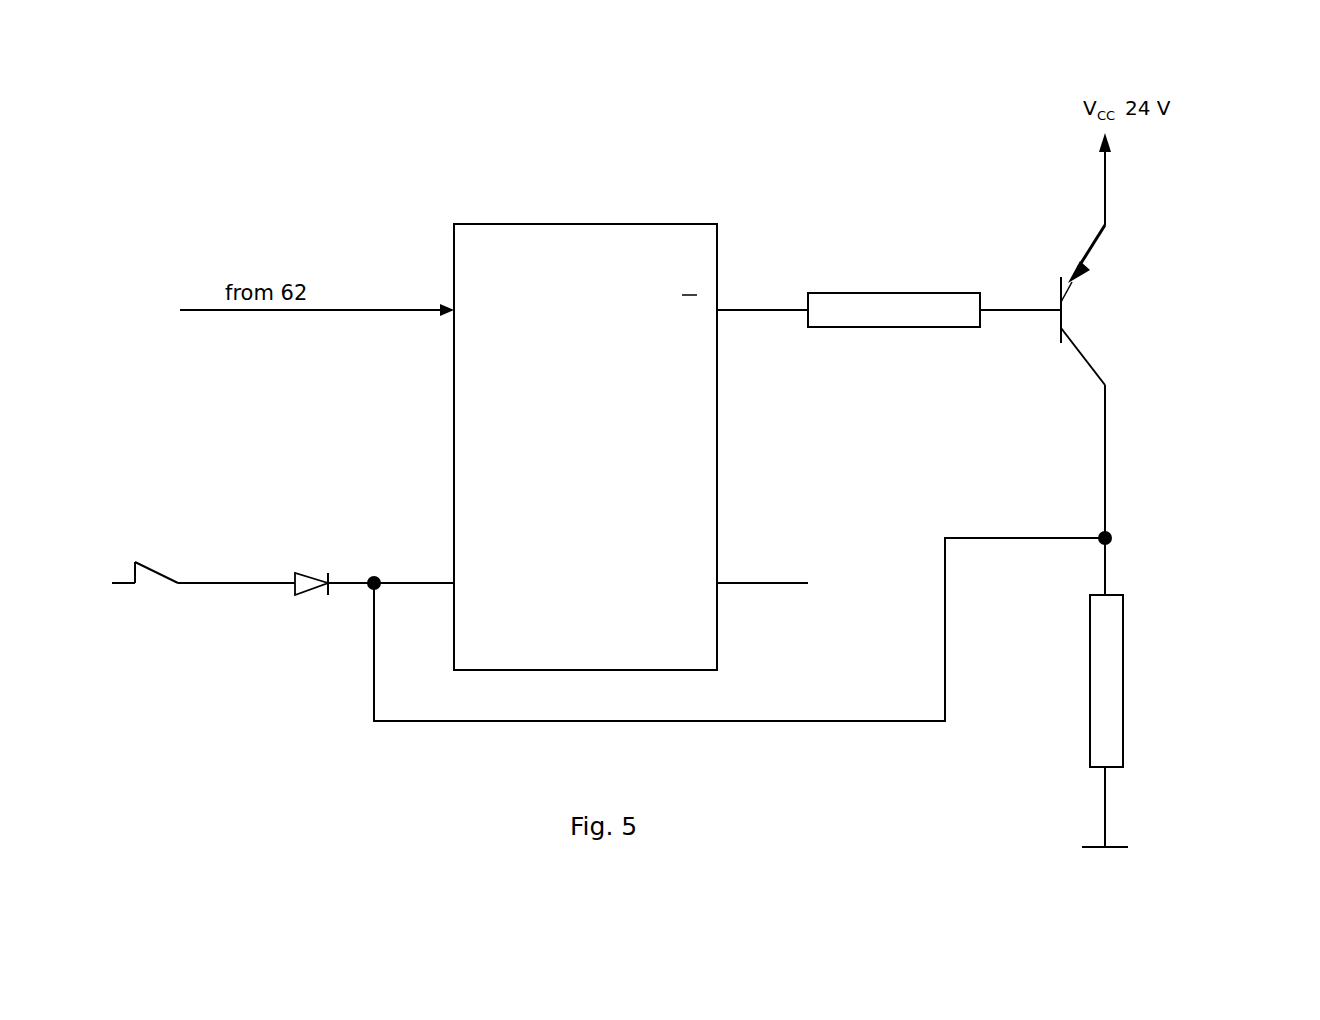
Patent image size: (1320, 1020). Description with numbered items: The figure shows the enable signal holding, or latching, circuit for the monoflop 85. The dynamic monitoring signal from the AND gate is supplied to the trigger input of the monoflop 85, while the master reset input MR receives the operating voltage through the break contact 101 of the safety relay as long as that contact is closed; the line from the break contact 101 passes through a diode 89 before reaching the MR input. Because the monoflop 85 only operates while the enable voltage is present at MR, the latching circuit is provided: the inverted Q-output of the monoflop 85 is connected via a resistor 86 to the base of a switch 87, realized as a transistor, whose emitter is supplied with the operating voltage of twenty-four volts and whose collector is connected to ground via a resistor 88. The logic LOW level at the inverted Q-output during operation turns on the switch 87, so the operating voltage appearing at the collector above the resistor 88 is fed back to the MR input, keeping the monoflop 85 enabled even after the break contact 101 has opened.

The monoflop 85 is at (523, 224).
The resistor 86 is at (832, 293).
The switch 87 is at (1062, 310).
The resistor 88 is at (1123, 692).
The diode 89 is at (307, 572).
The break contact 101 is at (148, 568).